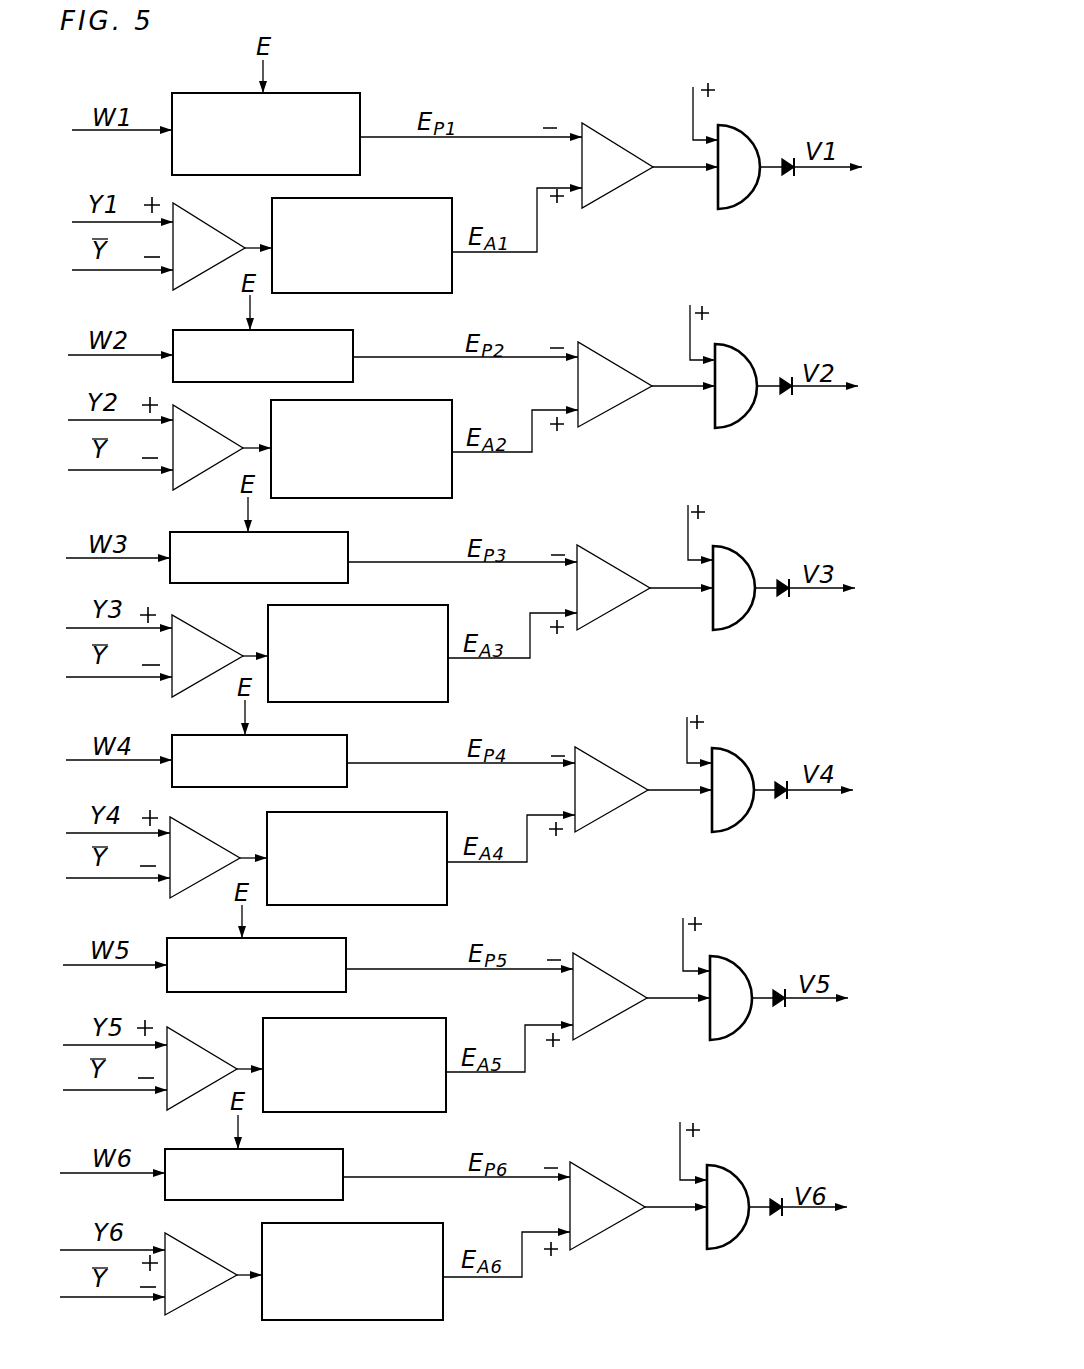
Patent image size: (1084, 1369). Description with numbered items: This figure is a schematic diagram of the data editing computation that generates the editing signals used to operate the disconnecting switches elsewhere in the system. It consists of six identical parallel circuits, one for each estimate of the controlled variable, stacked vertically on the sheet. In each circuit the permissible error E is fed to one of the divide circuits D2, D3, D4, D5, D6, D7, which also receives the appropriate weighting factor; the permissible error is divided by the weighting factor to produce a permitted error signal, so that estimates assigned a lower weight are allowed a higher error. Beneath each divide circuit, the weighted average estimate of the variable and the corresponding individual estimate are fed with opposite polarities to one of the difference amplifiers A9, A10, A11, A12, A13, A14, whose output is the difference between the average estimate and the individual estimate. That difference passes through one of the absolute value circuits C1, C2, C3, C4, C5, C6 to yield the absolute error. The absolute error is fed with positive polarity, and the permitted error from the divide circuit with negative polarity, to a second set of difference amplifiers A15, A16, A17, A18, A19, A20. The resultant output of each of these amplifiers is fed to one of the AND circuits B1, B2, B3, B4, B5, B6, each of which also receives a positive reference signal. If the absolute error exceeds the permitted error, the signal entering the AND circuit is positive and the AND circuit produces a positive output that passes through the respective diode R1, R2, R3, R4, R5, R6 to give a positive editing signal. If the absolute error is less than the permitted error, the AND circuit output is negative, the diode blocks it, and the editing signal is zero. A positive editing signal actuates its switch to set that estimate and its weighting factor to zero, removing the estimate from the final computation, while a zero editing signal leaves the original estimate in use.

The divide circuit D2 is at (329, 98).
The divide circuit D3 is at (349, 335).
The divide circuit D4 is at (347, 538).
The divide circuit D5 is at (348, 748).
The divide circuit D6 is at (345, 957).
The divide circuit D7 is at (340, 1157).
The absolute value circuit C1 is at (410, 200).
The absolute value circuit C2 is at (444, 405).
The absolute value circuit C3 is at (447, 613).
The absolute value circuit C4 is at (447, 821).
The absolute value circuit C5 is at (446, 1027).
The absolute value circuit C6 is at (437, 1227).
The difference amplifier A9 is at (222, 246).
The difference amplifier A10 is at (222, 447).
The difference amplifier A11 is at (220, 656).
The difference amplifier A12 is at (218, 857).
The difference amplifier A13 is at (215, 1068).
The difference amplifier A14 is at (213, 1274).
The difference amplifier A15 is at (650, 165).
The difference amplifier A16 is at (646, 384).
The difference amplifier A17 is at (645, 587).
The difference amplifier A18 is at (643, 789).
The difference amplifier A19 is at (641, 996).
The difference amplifier A20 is at (638, 1206).
The AND circuit B1 is at (742, 128).
The AND circuit B2 is at (745, 358).
The AND circuit B3 is at (742, 553).
The AND circuit B4 is at (741, 757).
The AND circuit B5 is at (740, 963).
The AND circuit B6 is at (737, 1173).
The diode R1 is at (785, 178).
The diode R2 is at (789, 397).
The diode R3 is at (780, 598).
The diode R4 is at (778, 800).
The diode R5 is at (777, 1008).
The diode R6 is at (777, 1216).